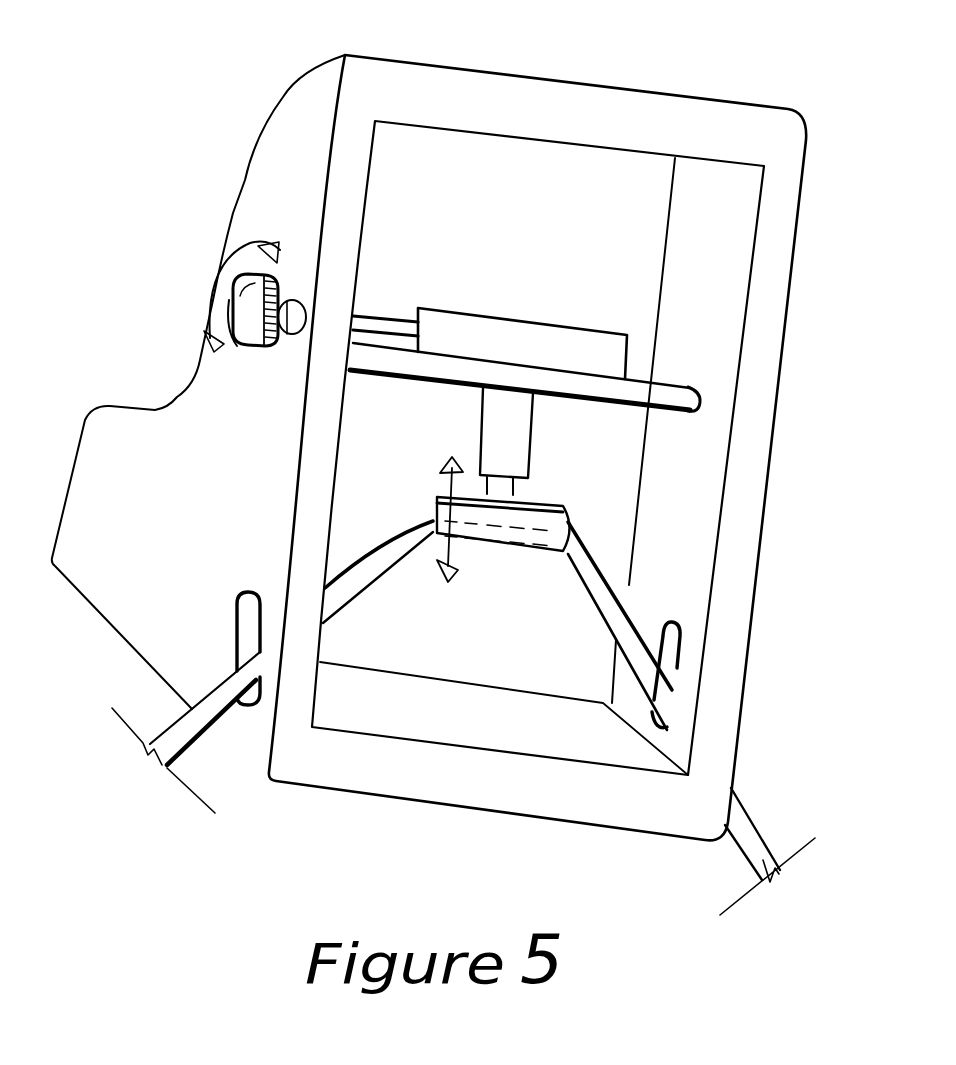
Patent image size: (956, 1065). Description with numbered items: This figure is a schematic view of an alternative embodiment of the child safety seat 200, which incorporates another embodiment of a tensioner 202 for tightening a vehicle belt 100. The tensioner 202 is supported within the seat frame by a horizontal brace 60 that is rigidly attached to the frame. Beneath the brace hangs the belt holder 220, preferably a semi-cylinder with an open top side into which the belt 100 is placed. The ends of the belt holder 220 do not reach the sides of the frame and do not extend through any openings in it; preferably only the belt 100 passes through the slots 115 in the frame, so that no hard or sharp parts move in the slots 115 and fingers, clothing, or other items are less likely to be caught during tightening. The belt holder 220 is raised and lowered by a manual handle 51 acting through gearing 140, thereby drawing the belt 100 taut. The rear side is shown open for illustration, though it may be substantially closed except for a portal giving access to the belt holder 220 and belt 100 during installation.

The child safety seat 200 is at (212, 106).
The manual handle 51 is at (232, 285).
The horizontal brace 60 is at (647, 400).
The tensioner 202 is at (494, 278).
The gearing 140 is at (493, 347).
The belt holder 220 is at (540, 496).
The belt 100 is at (384, 553).
The slots 115 is at (245, 612).